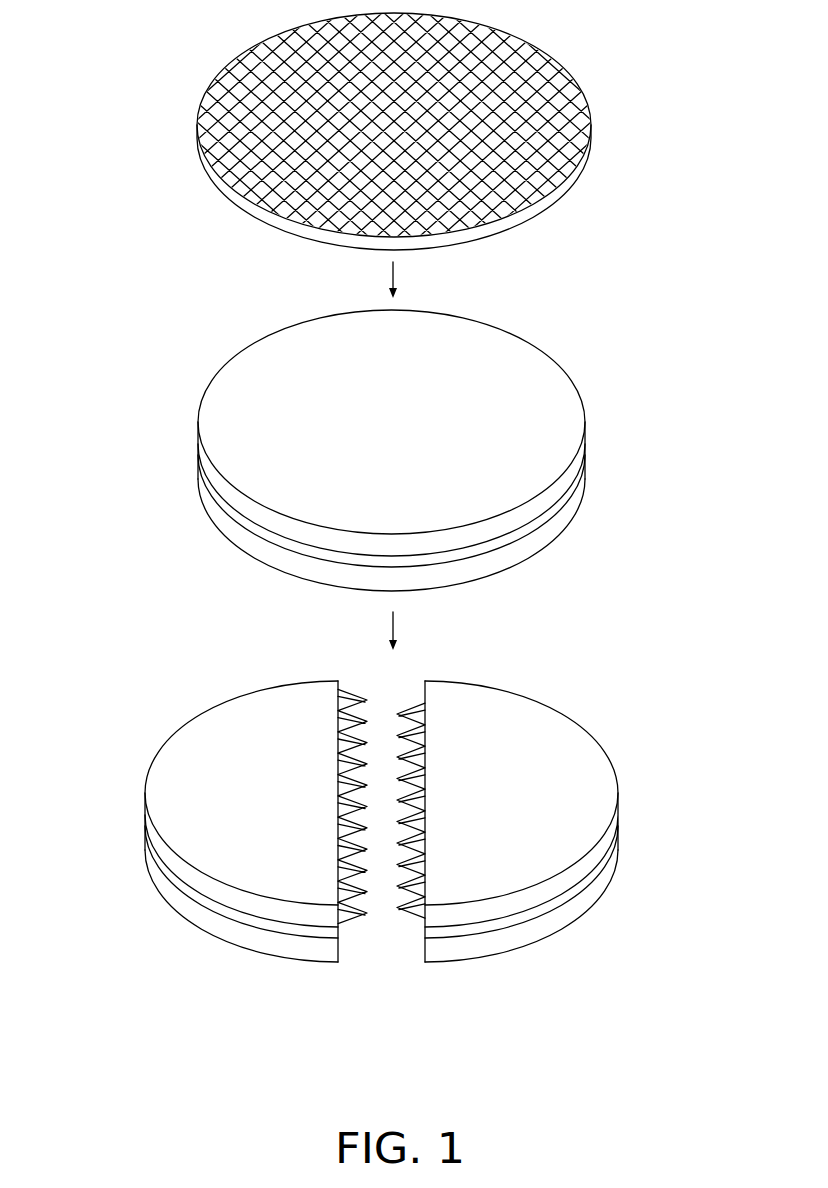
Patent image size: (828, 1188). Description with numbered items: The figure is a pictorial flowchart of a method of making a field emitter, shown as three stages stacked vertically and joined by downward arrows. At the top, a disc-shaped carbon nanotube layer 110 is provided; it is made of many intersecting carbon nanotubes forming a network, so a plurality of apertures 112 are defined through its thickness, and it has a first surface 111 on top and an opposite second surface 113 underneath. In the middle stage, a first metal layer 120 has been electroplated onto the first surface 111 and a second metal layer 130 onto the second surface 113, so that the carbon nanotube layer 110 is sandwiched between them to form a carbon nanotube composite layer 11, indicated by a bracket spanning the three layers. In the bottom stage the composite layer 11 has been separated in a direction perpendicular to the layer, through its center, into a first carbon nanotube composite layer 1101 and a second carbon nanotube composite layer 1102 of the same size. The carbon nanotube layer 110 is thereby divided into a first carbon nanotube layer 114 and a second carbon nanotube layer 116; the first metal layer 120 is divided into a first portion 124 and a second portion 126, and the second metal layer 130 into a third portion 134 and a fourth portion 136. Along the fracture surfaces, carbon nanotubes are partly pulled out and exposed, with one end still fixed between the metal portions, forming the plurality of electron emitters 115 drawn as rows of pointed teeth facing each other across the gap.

The carbon nanotube composite layer 11 is at (671, 423).
The carbon nanotube layer 110 is at (392, 290).
The first surface 111 is at (260, 78).
The apertures 112 is at (560, 118).
The second surface 113 is at (228, 202).
The first carbon nanotube layer 114 is at (195, 895).
The electron emitters 115 is at (410, 913).
The second carbon nanotube layer 116 is at (566, 898).
The first metal layer 120 is at (586, 454).
The first portion 124 is at (178, 815).
The second portion 126 is at (577, 817).
The second metal layer 130 is at (570, 512).
The first portion of second protective layer 134 is at (235, 930).
The fourth portion 136 is at (498, 943).
The first carbon nanotube composite layer 1101 is at (147, 997).
The second carbon nanotube composite layer 1102 is at (734, 794).